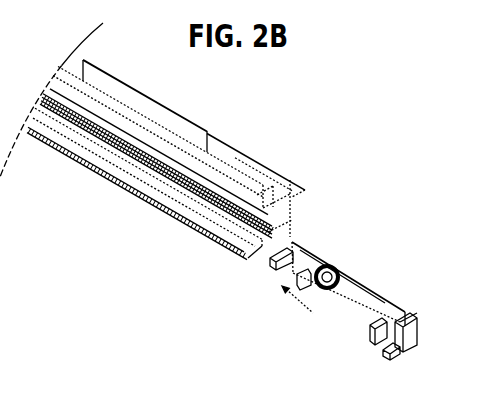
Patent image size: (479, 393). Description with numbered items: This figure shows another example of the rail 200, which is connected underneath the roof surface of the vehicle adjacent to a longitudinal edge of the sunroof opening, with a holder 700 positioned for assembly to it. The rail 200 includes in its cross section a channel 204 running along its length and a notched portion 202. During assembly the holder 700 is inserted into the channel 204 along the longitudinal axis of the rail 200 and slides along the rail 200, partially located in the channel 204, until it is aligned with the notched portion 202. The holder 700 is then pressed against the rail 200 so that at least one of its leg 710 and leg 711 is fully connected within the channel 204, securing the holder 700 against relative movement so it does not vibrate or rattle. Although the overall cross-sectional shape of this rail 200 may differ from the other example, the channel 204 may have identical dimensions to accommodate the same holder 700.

The rail 200 is at (170, 165).
The notched portion 202 is at (170, 182).
The channel 204 is at (248, 256).
The holder 700 is at (337, 317).
The leg 710 is at (398, 356).
The leg 711 is at (276, 262).